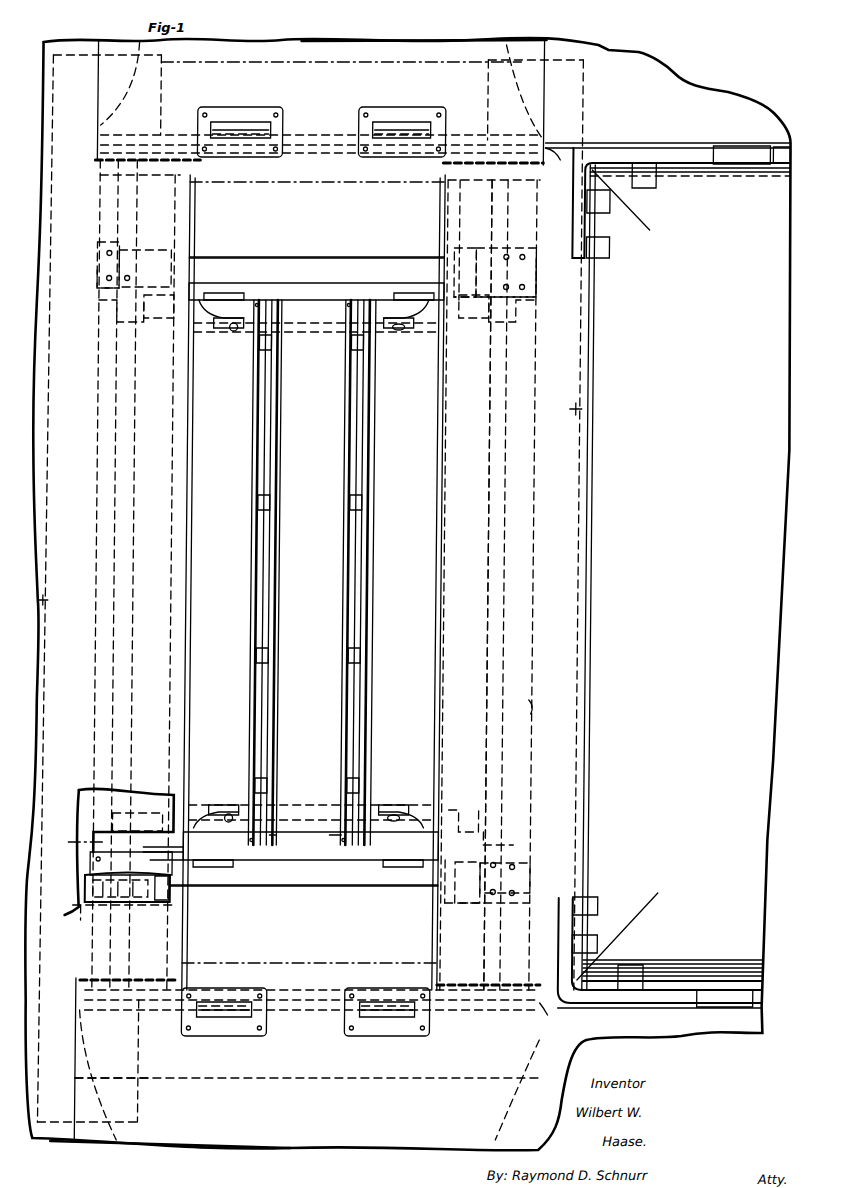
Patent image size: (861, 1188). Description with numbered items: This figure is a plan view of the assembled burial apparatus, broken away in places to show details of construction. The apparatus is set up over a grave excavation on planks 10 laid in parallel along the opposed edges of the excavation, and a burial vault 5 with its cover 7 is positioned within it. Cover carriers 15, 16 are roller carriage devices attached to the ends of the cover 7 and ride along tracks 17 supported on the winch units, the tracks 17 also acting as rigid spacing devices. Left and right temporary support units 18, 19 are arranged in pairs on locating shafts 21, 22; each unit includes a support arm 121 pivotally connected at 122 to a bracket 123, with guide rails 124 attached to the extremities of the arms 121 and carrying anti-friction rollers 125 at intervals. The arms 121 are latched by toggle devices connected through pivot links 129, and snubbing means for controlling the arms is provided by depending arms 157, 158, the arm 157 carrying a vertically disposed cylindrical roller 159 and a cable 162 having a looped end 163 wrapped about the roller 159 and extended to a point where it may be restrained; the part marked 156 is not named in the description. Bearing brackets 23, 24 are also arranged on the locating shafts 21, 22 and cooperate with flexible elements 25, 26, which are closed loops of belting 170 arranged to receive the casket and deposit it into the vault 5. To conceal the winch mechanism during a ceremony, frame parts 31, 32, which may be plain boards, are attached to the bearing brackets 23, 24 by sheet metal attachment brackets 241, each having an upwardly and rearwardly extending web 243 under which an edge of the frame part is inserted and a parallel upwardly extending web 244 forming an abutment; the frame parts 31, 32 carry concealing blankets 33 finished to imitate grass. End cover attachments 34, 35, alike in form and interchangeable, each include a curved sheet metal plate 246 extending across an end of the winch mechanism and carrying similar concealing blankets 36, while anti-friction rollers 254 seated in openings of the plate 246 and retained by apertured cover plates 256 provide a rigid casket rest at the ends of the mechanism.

The burial vault 5 is at (313, 582).
The cover 7 is at (664, 575).
The planks 10 is at (583, 106).
The cover carrier 15 is at (606, 902).
The cover carrier 16 is at (610, 248).
The tracks 17 is at (556, 152).
The left temporary support unit 18 is at (282, 833).
The right temporary support unit 19 is at (326, 833).
The locating shaft 21 is at (138, 593).
The locating shaft 22 is at (490, 580).
The bearing bracket 23 is at (72, 870).
The bearing bracket 24 is at (530, 248).
The flexible element 25 is at (216, 260).
The flexible element 26 is at (224, 885).
The frame part 31 is at (100, 803).
The frame part 32 is at (537, 716).
The concealing blankets 33 is at (598, 409).
The end cover attachment 34 is at (165, 1080).
The end cover attachment 35 is at (346, 62).
The concealing blankets 36 is at (470, 52).
The support arm 121 is at (210, 291).
The pivot connection 122 is at (300, 563).
The bracket 123 is at (538, 328).
The guide rails 124 is at (253, 675).
The anti-friction rollers 125 is at (347, 360).
The pivot links 129 is at (240, 293).
The lower right latch lug 156 is at (404, 812).
The depending arm 157 is at (224, 336).
The depending arm 158 is at (410, 336).
The cylindrical roller 159 is at (236, 340).
The cable 162 is at (324, 324).
The looped end 163 is at (400, 340).
The belting 170 is at (348, 258).
The attachment brackets 241 is at (98, 245).
The web 243 is at (148, 242).
The web 244 is at (98, 270).
The curved sheet metal plate 246 is at (222, 62).
The anti-friction rollers 254 is at (226, 126).
The cover plates 256 is at (226, 108).